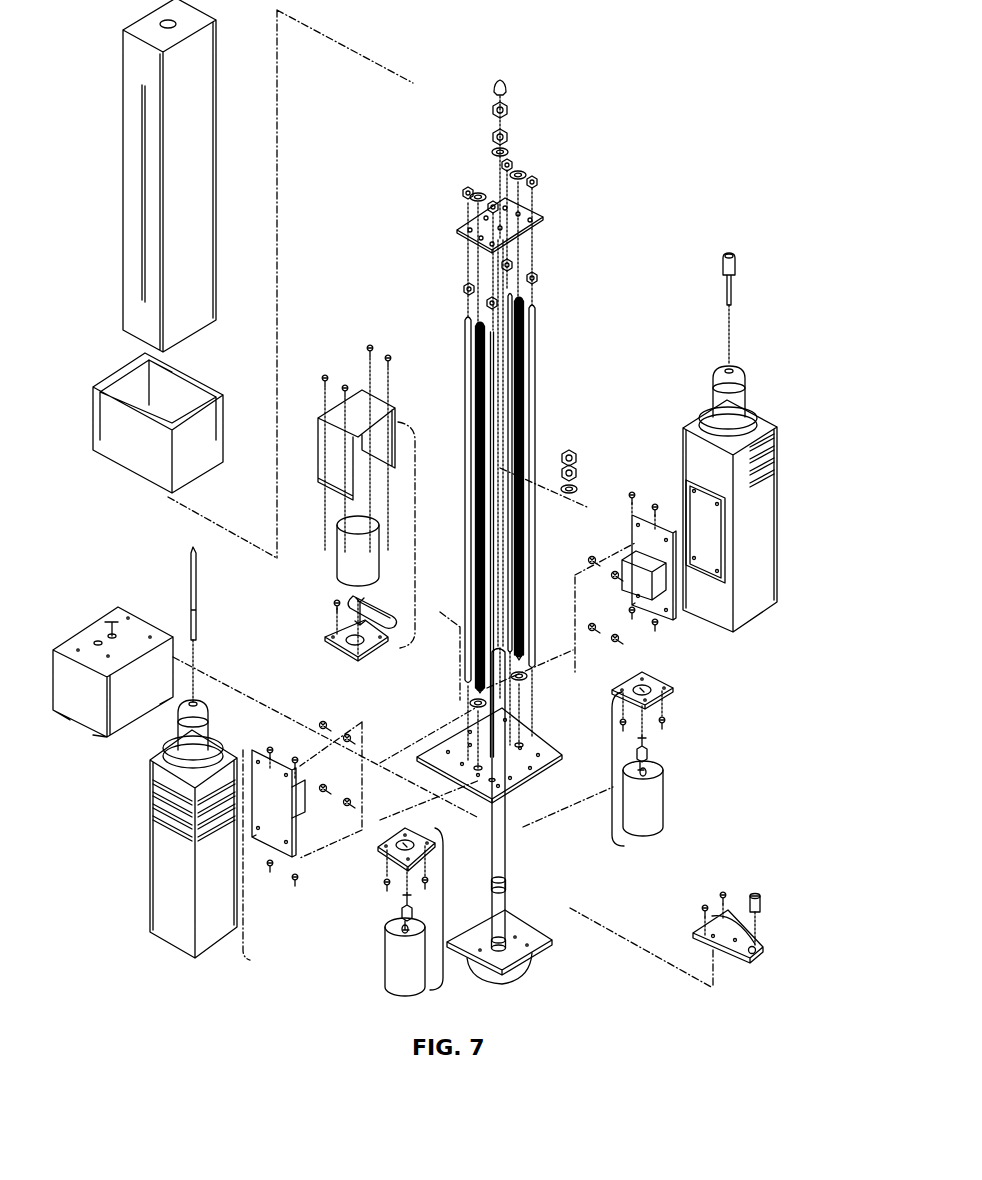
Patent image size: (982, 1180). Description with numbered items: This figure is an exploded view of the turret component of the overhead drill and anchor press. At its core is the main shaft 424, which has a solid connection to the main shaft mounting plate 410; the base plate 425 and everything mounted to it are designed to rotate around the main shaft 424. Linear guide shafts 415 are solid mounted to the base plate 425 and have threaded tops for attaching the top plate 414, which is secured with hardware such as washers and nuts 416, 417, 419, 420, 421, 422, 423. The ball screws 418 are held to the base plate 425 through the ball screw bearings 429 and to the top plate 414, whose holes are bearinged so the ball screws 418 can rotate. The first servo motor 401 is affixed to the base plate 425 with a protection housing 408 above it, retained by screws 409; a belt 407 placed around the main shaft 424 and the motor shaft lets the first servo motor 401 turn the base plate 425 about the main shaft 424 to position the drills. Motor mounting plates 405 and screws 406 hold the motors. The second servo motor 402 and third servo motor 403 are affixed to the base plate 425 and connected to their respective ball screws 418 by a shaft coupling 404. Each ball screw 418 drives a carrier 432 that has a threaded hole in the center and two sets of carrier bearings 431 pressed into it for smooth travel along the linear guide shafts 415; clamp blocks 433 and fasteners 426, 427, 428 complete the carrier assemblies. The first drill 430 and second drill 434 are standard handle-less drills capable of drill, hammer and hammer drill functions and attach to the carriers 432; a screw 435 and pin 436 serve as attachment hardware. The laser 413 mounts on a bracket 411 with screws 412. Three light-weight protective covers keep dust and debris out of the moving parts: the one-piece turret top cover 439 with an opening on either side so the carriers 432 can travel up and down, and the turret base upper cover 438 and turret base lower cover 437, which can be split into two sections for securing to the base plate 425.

The servo motor #1 401 is at (337, 556).
The servo motor #2 402 is at (385, 938).
The servo motor #3 403 is at (663, 792).
The shaft coupling 404 is at (403, 910).
The mounting plate 405 is at (340, 640).
The screw 406 is at (333, 606).
The belt 407 is at (372, 622).
The protection housing 408 is at (335, 405).
The screw 409 is at (370, 345).
The main shaft mounting plate 410 is at (552, 945).
The bracket 411 is at (760, 940).
The screw 412 is at (728, 893).
The laser 413 is at (762, 898).
The top plate 414 is at (457, 230).
The linear guide shafts 415 is at (490, 340).
The nut 416 is at (488, 305).
The washer 417 is at (488, 208).
The ball screws 418 is at (478, 335).
The nut 419 is at (478, 193).
The washer 420 is at (490, 150).
The nut 421 is at (490, 133).
The nut 422 is at (490, 108).
The cap nut 423 is at (490, 84).
The main shaft 424 is at (507, 850).
The base plate 425 is at (525, 790).
The nut 426 is at (575, 453).
The nut 427 is at (575, 469).
The washer 428 is at (577, 486).
The ball screw bearing 429 is at (470, 703).
The drill #1 430 is at (150, 850).
The carrier bearings 431 is at (656, 502).
The carrier 432 is at (660, 590).
The clamp block 433 is at (622, 642).
The drill #2 434 is at (777, 492).
The screw 435 is at (737, 283).
The pin 436 is at (190, 600).
The turret base lower cover 437 is at (95, 630).
The turret base upper cover 438 is at (125, 352).
The turret top cover 439 is at (123, 262).